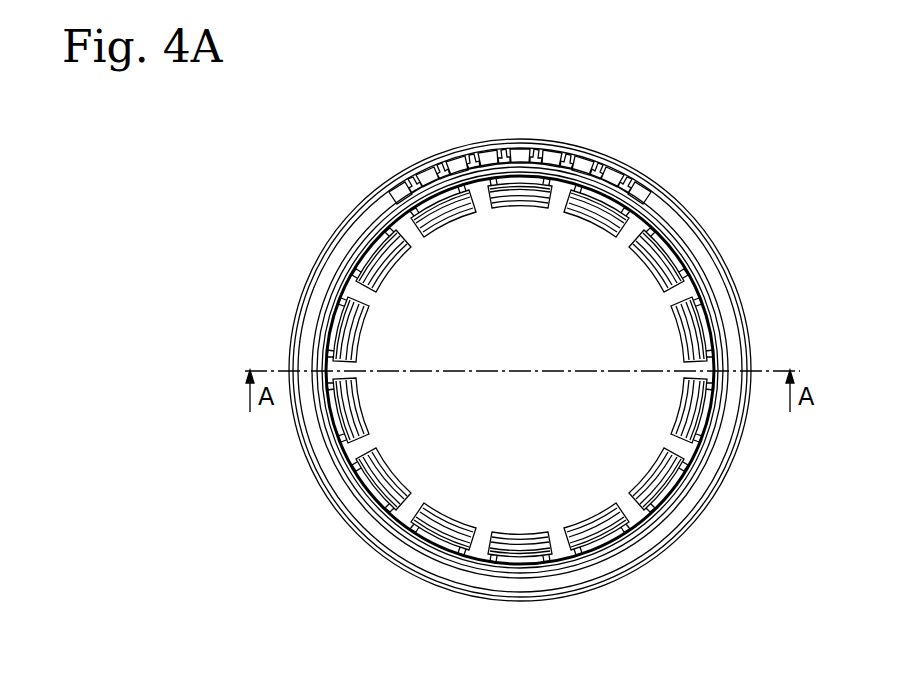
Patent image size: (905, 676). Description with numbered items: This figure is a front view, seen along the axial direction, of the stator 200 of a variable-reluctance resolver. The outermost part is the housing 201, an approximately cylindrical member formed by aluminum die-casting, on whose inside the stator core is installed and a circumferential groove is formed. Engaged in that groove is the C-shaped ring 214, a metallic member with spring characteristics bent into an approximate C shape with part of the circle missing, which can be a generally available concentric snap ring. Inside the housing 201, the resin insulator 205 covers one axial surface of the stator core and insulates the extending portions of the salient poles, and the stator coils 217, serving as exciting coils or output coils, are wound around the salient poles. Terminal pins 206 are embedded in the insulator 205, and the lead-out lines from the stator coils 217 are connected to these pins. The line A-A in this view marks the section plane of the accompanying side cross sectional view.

The stator 200 is at (715, 248).
The housing 201 is at (658, 182).
The insulator 205 is at (705, 417).
The terminal pins 206 is at (449, 131).
The C-shaped ring 214 is at (698, 488).
The stator coils 217 is at (693, 337).